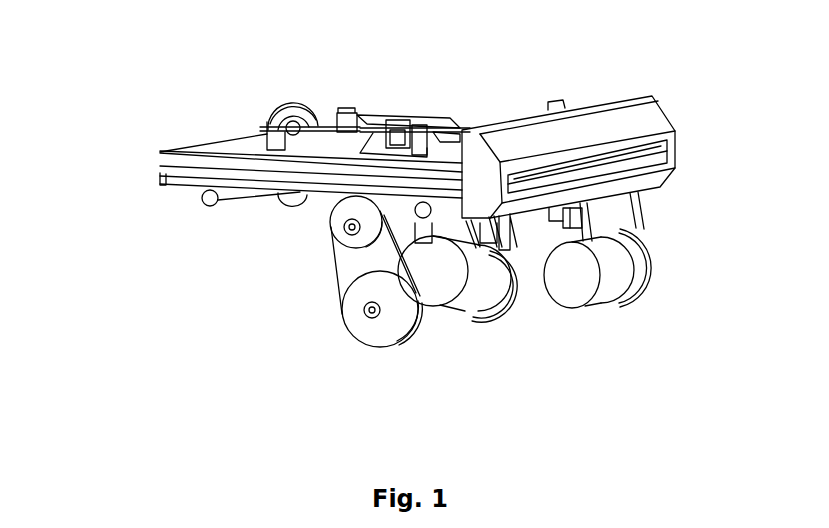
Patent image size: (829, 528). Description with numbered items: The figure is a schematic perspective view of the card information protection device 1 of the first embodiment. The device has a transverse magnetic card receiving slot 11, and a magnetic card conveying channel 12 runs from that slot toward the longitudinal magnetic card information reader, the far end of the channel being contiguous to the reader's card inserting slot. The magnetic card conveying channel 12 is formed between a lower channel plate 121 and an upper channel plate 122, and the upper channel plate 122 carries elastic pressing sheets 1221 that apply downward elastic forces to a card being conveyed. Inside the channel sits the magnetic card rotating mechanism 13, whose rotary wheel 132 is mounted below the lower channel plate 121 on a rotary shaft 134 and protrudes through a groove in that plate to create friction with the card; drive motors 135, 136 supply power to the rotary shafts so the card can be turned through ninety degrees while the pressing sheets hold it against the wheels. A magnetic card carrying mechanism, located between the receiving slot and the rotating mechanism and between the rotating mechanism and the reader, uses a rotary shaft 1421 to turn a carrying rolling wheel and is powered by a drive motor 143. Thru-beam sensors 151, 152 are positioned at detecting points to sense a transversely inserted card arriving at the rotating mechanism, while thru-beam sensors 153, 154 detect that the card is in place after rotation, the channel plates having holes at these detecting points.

The card information protection device 1 is at (665, 56).
The transverse magnetic card receiving slot 11 is at (673, 133).
The magnetic card conveying channel 12 is at (243, 132).
The lower channel plate 121 is at (175, 178).
The upper channel plate 122 is at (238, 145).
The elastic pressing sheet 1221 is at (370, 117).
The magnetic card rotating mechanism 13 is at (331, 332).
The rotary wheel 132 is at (348, 273).
The rotary shaft 134 is at (350, 229).
The drive motor 135 is at (424, 330).
The drive motor 136 is at (373, 305).
The rotary shaft 1421 is at (208, 198).
The drive motor 143 is at (583, 276).
The thru-beam sensor 151 is at (550, 100).
The thru-beam sensor 152 is at (420, 118).
The thru-beam sensor 153 is at (582, 218).
The thru-beam sensor 154 is at (518, 277).